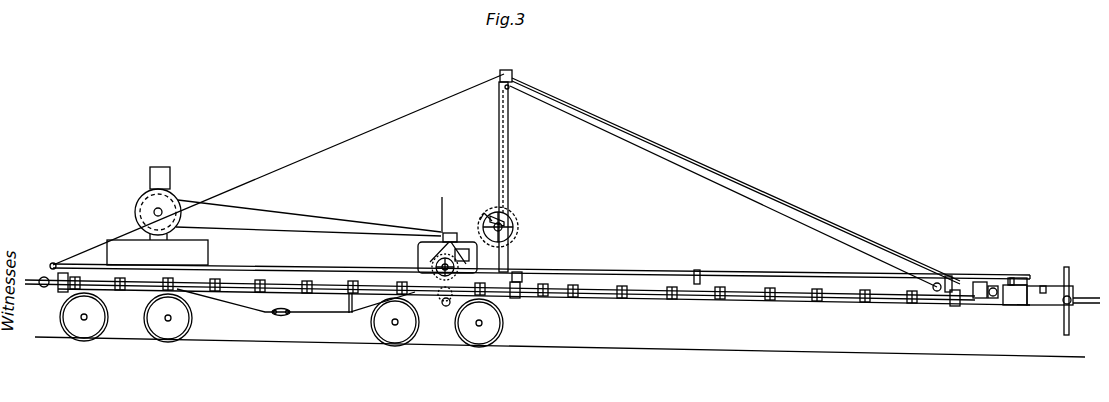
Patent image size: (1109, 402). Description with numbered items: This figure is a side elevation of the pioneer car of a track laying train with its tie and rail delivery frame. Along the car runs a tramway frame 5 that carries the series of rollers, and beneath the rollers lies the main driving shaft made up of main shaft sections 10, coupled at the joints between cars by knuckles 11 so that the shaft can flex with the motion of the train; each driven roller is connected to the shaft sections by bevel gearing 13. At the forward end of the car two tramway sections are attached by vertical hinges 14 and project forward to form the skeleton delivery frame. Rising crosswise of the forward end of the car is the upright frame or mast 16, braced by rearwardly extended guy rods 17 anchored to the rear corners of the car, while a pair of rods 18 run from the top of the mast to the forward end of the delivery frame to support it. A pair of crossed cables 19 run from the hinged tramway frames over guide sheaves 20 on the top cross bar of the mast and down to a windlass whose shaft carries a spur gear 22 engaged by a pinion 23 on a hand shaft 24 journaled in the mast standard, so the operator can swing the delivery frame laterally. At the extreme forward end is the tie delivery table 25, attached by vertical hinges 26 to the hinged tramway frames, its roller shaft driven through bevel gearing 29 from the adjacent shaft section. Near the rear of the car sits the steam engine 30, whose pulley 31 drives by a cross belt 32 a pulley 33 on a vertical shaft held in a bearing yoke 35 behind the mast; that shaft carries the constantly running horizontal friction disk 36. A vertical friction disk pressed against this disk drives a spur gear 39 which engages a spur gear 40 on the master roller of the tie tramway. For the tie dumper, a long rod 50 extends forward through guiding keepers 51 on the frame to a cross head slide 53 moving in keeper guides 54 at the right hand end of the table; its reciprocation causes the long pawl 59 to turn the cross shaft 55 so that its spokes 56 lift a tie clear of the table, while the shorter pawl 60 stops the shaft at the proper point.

The tramway frame 5 is at (160, 273).
The main shaft section 10 is at (144, 292).
The knuckle 11 is at (44, 288).
The bevel gearing 13 is at (122, 277).
The vertical hinge 14 is at (520, 276).
The upright frame or mast 16 is at (509, 176).
The guy rod 17 is at (296, 165).
The support rod 18 is at (710, 172).
The crossed cable 19 is at (499, 154).
The guide sheave 20 is at (513, 77).
The spur gear 22 is at (519, 228).
The pinion 23 is at (506, 219).
The hand shaft 24 is at (488, 212).
The tie delivery table 25 is at (990, 300).
The vertical hinge 26 is at (978, 282).
The bevel gearing 29 is at (928, 352).
The steam engine 30 is at (163, 173).
The pulley 31 is at (135, 212).
The cross belt 32 is at (277, 235).
The pulley 33 is at (447, 242).
The bearing yoke 35 is at (418, 251).
The horizontal friction disk 36 is at (443, 236).
The spur gear 39 is at (440, 298).
The spur gear 40 is at (447, 306).
The long rod 50 is at (633, 272).
The guiding keeper 51 is at (700, 273).
The cross head slide 53 is at (1022, 279).
The keeper guide 54 is at (1010, 278).
The cross shaft 55 is at (1070, 303).
The spokes or radial arms 56 is at (1070, 272).
The long pawl 59 is at (1047, 306).
The shorter pawl 60 is at (1012, 306).